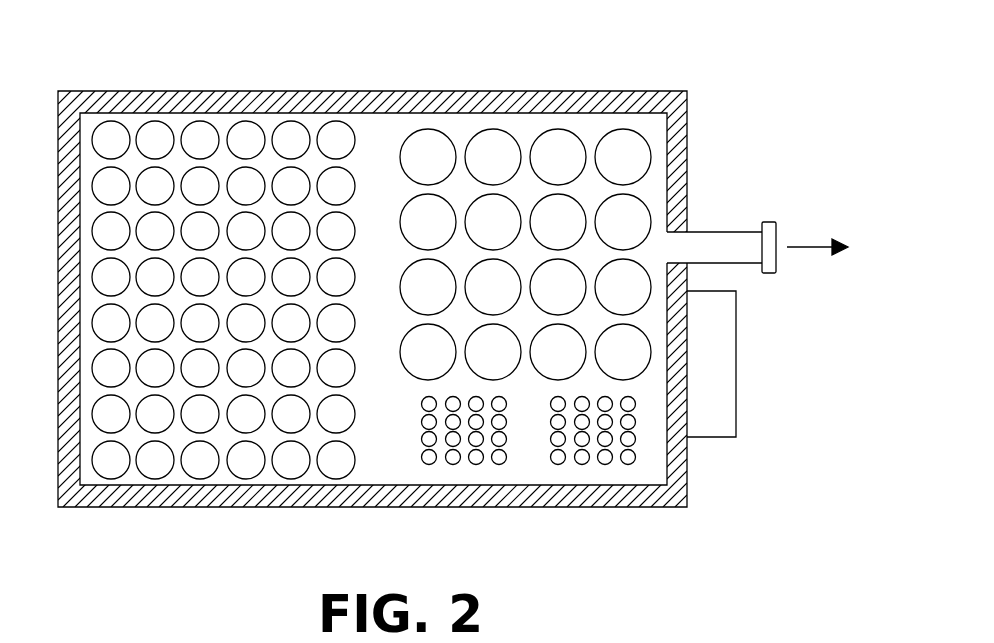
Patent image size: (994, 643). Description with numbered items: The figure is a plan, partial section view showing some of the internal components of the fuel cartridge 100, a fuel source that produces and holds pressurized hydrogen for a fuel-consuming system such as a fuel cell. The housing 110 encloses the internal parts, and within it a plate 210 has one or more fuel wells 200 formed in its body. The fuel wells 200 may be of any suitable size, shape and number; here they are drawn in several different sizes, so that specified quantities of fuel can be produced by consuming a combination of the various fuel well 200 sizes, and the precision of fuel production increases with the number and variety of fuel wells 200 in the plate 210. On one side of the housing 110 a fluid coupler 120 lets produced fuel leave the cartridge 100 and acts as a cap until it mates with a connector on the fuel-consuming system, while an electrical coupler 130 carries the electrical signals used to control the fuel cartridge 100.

The fuel cartridge 100 is at (528, 56).
The housing 110 is at (393, 107).
The fluid coupler 120 is at (738, 239).
The electrical coupler 130 is at (725, 407).
The fuel wells 200 is at (246, 138).
The plate 210 is at (385, 423).